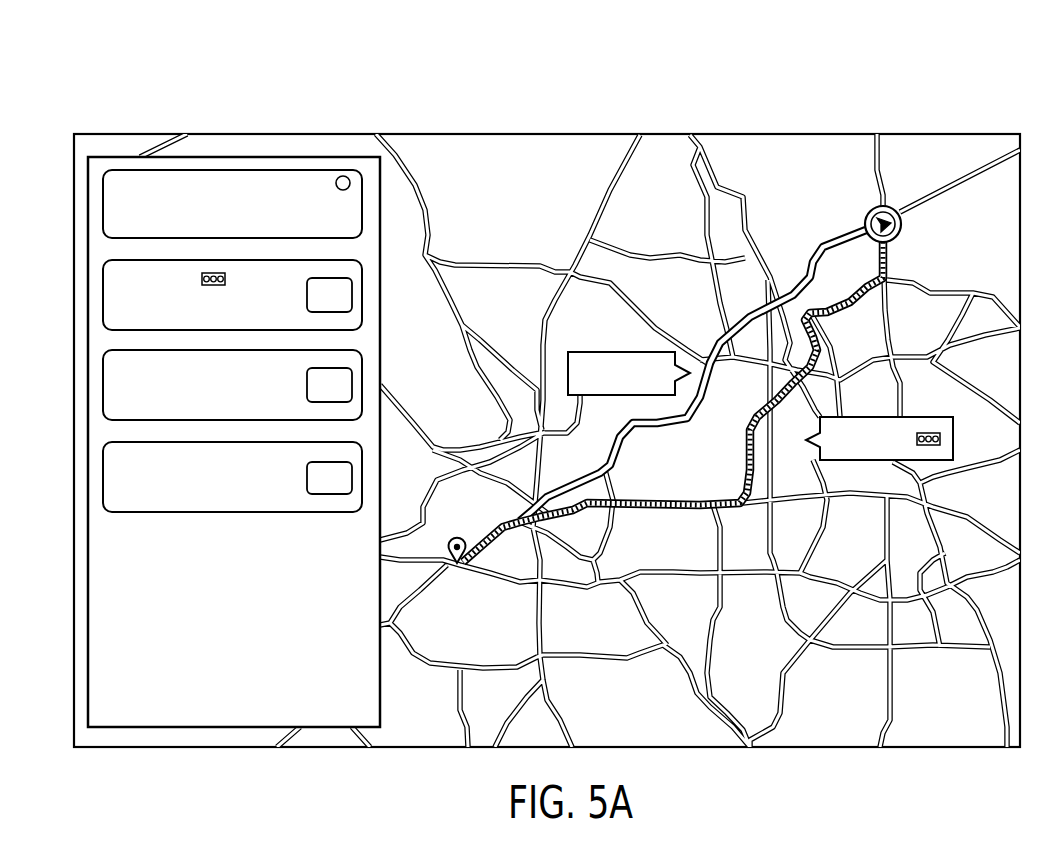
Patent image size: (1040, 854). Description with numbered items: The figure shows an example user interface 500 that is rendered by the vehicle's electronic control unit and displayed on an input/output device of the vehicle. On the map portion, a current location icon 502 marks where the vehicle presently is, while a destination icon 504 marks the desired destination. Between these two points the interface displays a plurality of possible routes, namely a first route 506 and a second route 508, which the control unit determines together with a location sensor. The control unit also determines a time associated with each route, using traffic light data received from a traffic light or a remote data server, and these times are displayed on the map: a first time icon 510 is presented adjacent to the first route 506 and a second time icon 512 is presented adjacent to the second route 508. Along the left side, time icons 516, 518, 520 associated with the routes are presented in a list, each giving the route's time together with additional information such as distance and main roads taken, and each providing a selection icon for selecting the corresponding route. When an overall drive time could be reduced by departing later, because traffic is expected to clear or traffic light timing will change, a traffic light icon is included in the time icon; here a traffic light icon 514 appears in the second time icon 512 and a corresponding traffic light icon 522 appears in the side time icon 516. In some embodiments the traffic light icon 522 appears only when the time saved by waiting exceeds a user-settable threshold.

The user interface 500 is at (163, 92).
The current location icon 502 is at (900, 202).
The destination icon 504 is at (456, 540).
The first route 506 is at (830, 238).
The second route 508 is at (892, 265).
The first time icon 510 is at (600, 351).
The second time icon 512 is at (948, 411).
The traffic light icon 514 is at (942, 438).
The time icon 516 is at (103, 293).
The time icon 518 is at (103, 388).
The time icon 520 is at (103, 478).
The traffic light icon 522 is at (226, 279).